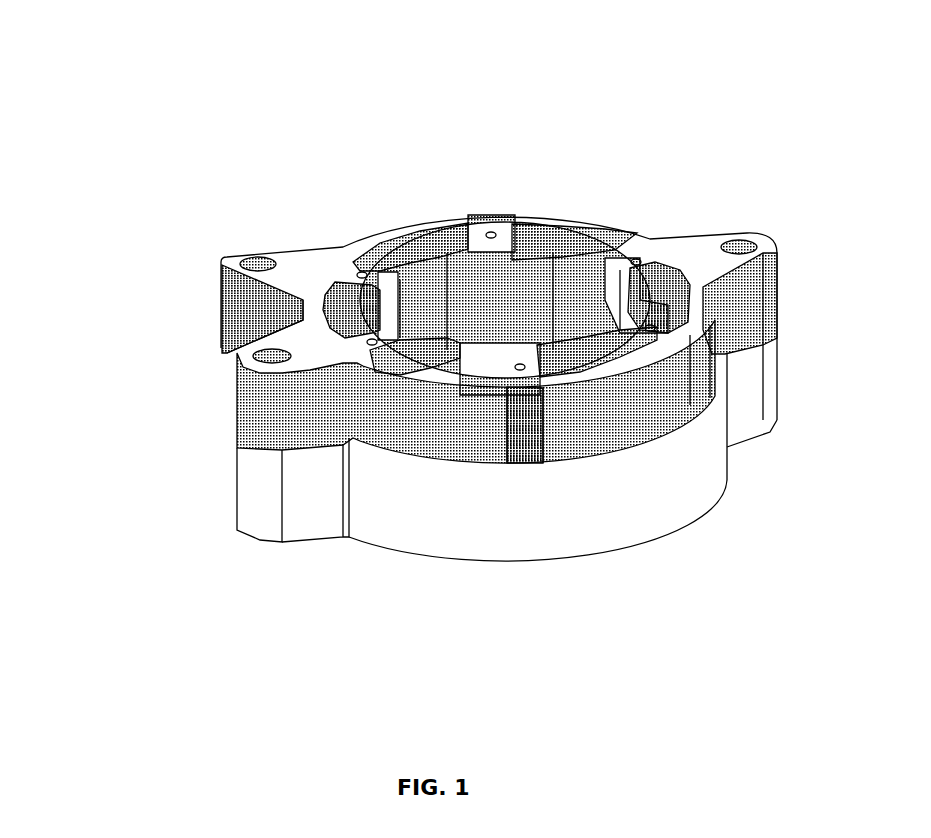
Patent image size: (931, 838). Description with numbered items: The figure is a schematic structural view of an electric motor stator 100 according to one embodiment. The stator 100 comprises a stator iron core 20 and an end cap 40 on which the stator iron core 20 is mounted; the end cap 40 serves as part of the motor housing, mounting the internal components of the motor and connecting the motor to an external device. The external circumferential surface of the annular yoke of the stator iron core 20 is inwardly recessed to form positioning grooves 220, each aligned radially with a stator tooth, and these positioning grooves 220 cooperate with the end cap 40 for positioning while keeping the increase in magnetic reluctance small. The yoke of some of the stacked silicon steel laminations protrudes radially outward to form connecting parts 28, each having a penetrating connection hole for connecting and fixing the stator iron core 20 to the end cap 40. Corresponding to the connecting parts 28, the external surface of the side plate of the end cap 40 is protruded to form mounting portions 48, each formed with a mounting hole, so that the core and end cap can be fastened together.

The electric motor stator 100 is at (372, 141).
The stator iron core 20 is at (645, 405).
The connecting part 28 is at (240, 410).
The mounting portion 48 is at (270, 513).
The end cap 40 is at (423, 512).
The positioning groove 220 is at (520, 440).